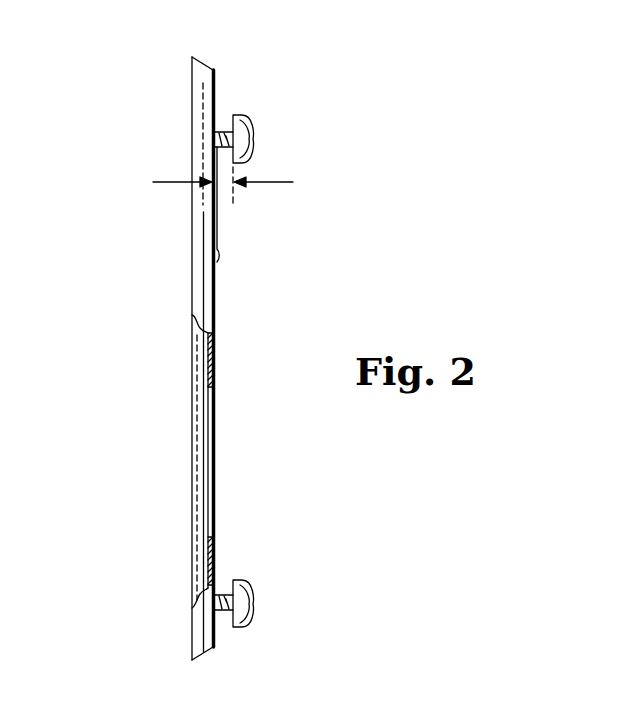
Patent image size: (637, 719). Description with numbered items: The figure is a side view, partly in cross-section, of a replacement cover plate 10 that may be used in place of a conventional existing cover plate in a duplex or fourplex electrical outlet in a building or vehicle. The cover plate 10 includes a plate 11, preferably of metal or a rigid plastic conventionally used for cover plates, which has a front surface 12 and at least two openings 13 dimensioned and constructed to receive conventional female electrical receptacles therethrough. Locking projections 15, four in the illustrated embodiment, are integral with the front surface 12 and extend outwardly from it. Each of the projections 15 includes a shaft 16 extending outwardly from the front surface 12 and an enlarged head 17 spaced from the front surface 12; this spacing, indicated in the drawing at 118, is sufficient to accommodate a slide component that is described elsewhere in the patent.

The cover plate 10 is at (160, 222).
The plate 11 is at (197, 288).
The front surface 12 is at (218, 262).
The openings 13 is at (210, 465).
The locking projections 15 is at (255, 125).
The shaft 16 is at (222, 131).
The enlarged head 17 is at (238, 138).
The panel thickness dimension 118 is at (222, 183).